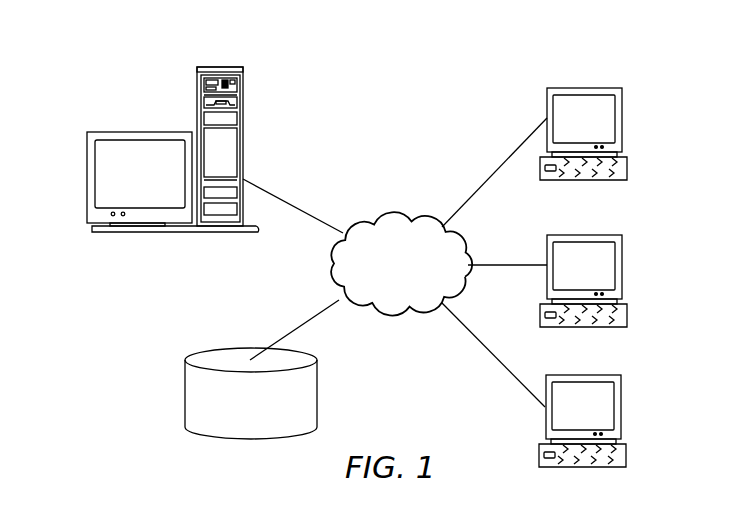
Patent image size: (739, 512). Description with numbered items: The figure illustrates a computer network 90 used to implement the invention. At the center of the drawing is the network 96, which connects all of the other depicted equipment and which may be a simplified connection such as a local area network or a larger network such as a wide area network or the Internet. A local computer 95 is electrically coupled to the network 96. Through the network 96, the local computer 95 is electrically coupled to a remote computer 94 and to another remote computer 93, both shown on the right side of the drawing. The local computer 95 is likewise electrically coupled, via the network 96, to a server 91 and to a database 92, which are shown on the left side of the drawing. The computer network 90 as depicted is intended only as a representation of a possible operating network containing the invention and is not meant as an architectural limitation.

The computer network 90 is at (451, 99).
The server 91 is at (87, 178).
The database 92 is at (186, 392).
The remote computer 93 is at (621, 407).
The remote computer 94 is at (622, 265).
The local computer 95 is at (622, 120).
The network 96 is at (412, 277).